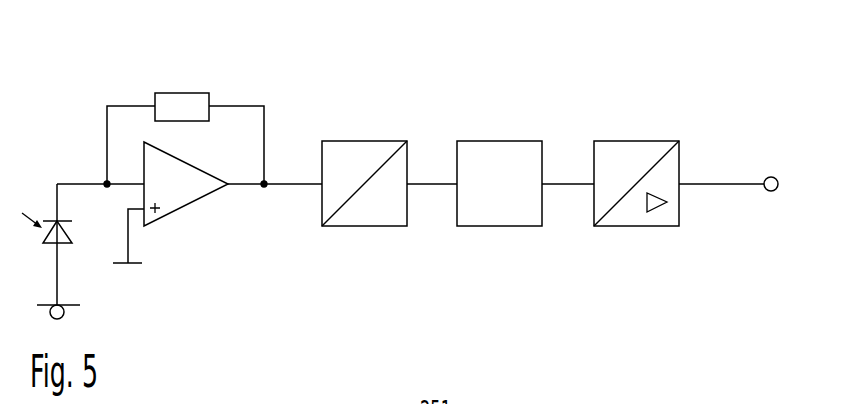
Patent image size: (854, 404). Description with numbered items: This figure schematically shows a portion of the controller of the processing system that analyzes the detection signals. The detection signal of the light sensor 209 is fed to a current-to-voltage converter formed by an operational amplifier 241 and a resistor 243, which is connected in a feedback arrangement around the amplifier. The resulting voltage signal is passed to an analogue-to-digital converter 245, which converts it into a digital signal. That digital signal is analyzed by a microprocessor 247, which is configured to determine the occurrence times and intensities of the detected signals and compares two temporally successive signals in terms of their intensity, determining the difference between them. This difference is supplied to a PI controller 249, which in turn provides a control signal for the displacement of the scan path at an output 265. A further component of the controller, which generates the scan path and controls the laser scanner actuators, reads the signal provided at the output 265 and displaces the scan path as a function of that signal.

The light sensor 209 is at (72, 233).
The operational amplifier 241 is at (193, 203).
The resistor 243 is at (183, 93).
The analogue-to-digital converter 245 is at (365, 141).
The microprocessor 247 is at (501, 141).
The PI controller 249 is at (638, 141).
The output 265 is at (771, 177).